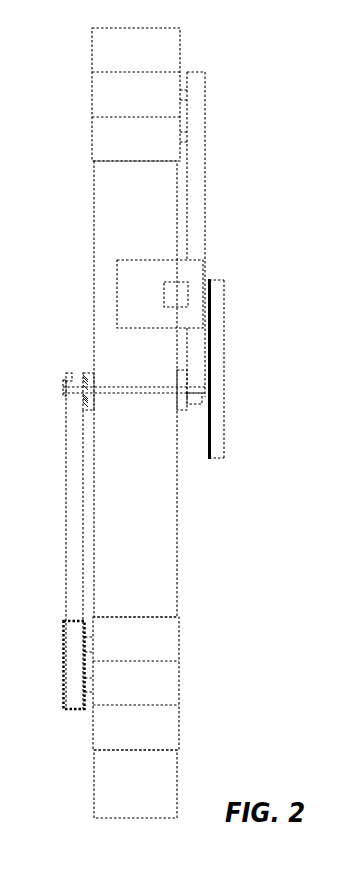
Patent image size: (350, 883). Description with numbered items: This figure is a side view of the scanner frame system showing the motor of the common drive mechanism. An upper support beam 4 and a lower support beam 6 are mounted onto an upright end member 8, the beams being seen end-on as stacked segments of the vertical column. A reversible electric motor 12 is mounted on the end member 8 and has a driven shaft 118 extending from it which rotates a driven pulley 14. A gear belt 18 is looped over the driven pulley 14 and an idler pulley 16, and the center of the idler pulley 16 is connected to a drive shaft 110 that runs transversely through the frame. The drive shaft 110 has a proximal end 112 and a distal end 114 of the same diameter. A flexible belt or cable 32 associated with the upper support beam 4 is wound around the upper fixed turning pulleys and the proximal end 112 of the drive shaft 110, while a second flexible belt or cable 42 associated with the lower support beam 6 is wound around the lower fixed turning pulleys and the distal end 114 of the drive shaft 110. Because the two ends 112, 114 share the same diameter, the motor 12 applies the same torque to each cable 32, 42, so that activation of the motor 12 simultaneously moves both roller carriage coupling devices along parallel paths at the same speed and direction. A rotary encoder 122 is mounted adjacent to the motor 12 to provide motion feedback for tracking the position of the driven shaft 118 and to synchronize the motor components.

The upper support beam 4 is at (92, 62).
The upright end member 8 is at (94, 197).
The lower support beam 6 is at (179, 730).
The flexible belt or cable 32 is at (207, 190).
The reversible electric motor 12 is at (147, 260).
The rotary encoder 122 is at (163, 298).
The driven shaft 118 is at (207, 279).
The gear belt 18 is at (224, 352).
The driven pulley 14 is at (246, 285).
The idler pulley 16 is at (246, 384).
The drive shaft 110 is at (108, 388).
The proximal end of drive shaft 112 is at (197, 408).
The distal end of drive shaft 114 is at (83, 378).
The flexible belt or cable 42 is at (65, 538).